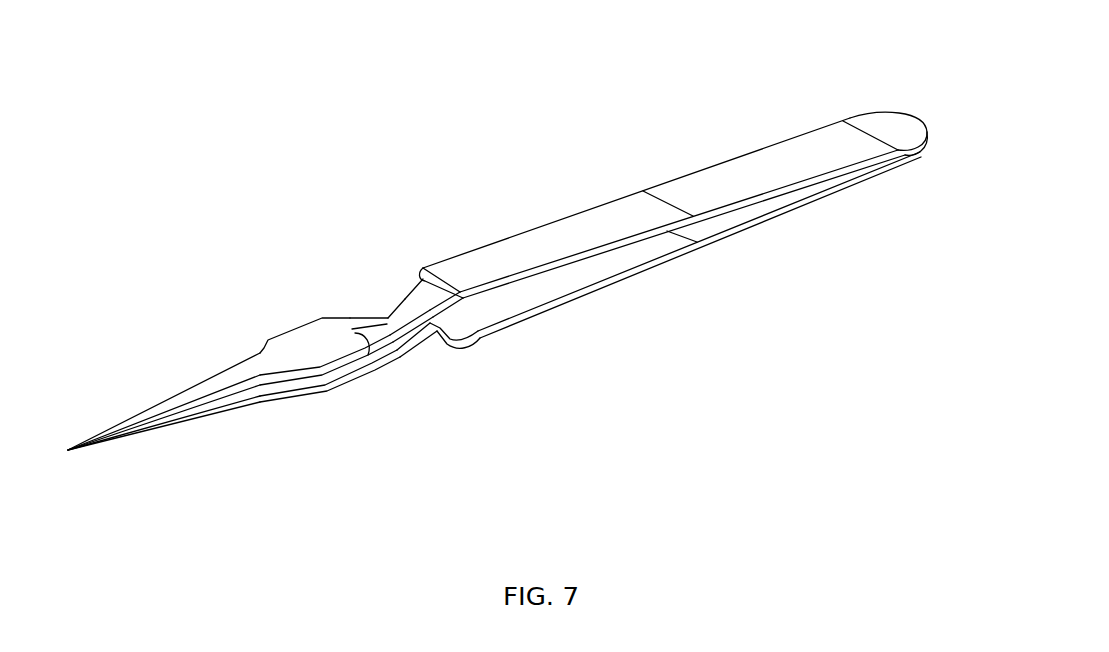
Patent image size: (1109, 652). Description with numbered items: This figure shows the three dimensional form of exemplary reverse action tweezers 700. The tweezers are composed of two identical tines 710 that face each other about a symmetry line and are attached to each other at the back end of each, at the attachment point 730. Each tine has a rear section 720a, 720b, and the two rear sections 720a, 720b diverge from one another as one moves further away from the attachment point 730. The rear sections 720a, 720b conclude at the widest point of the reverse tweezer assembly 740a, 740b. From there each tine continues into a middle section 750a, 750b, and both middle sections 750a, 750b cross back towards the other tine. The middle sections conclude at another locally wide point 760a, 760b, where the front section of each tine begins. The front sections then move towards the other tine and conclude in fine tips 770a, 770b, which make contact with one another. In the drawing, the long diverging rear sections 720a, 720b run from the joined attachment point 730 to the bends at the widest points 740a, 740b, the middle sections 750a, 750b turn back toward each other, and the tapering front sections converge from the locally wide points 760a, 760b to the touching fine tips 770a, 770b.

The reverse action tweezers 700 is at (557, 32).
The tines 710 is at (898, 149).
The rear section 720a is at (617, 220).
The rear section 720b is at (616, 258).
The attachment point 730 is at (927, 136).
The widest point 740a is at (431, 266).
The widest point 740b is at (433, 332).
The middle section 750a is at (368, 318).
The middle section 750b is at (391, 334).
The locally wide point 760a is at (328, 318).
The locally wide point 760b is at (370, 368).
The fine tip 770a is at (68, 450).
The fine tip 770b is at (68, 452).